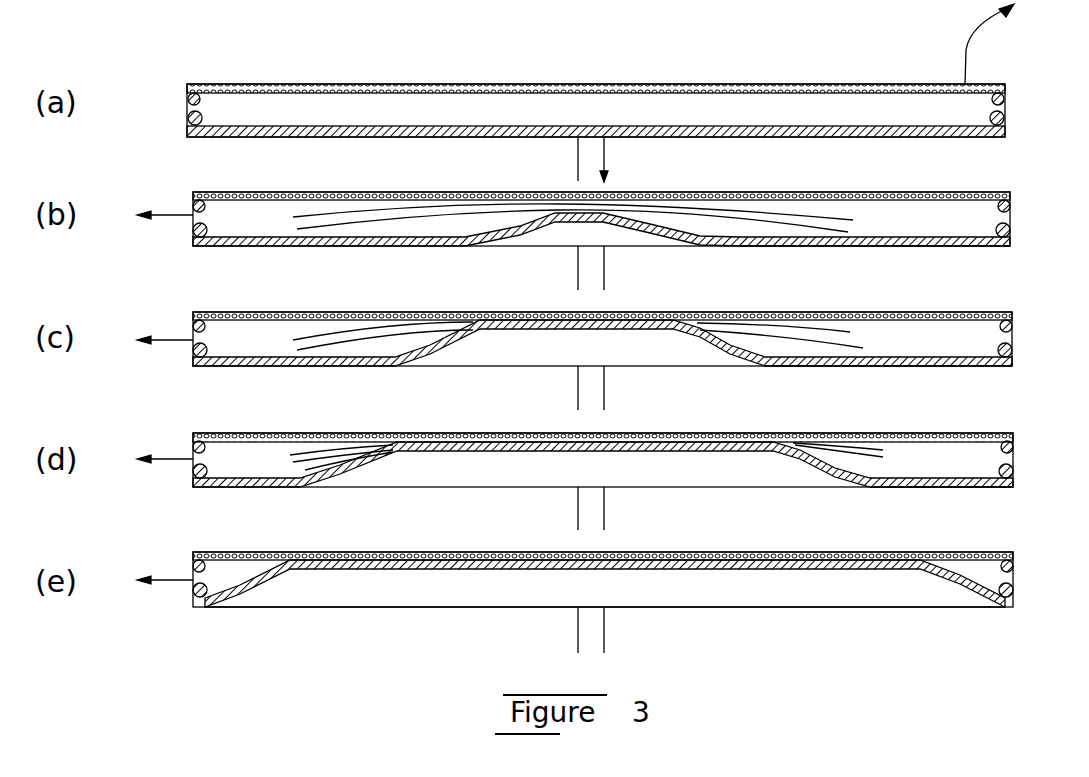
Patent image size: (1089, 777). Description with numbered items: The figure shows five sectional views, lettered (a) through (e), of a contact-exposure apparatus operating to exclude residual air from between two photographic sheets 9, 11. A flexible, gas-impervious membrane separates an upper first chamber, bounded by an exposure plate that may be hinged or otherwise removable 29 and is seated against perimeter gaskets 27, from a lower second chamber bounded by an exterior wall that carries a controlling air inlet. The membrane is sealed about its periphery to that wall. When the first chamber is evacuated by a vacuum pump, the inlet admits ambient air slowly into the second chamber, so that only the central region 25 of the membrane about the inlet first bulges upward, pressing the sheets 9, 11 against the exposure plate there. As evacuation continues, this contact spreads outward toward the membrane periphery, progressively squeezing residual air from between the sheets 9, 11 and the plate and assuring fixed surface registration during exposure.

The sheet 9 is at (803, 205).
The sheet 11 is at (795, 242).
The central region 25 is at (598, 360).
The perimeter gaskets 27 is at (181, 90).
The removable exposure plate feature 29 is at (980, 42).